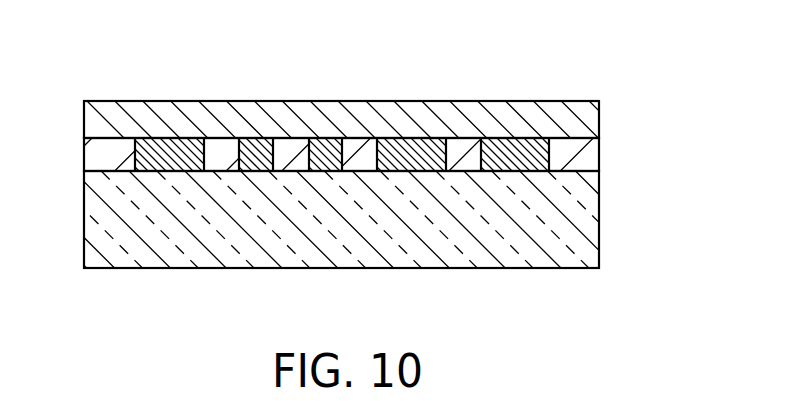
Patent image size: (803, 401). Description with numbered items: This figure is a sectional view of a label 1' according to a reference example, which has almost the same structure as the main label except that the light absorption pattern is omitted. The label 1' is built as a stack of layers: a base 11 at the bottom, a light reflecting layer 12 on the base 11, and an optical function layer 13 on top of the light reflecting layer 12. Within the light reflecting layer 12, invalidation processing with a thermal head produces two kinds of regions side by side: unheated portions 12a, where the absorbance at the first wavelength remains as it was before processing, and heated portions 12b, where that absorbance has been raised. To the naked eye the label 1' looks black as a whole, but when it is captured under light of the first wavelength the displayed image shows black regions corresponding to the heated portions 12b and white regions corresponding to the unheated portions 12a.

The label 1' is at (341, 156).
The base 11 is at (592, 210).
The light reflecting layer 12 is at (370, 224).
The unheated portion 12a is at (112, 155).
The heated portion 12b is at (327, 155).
The optical function layer 13 is at (592, 117).